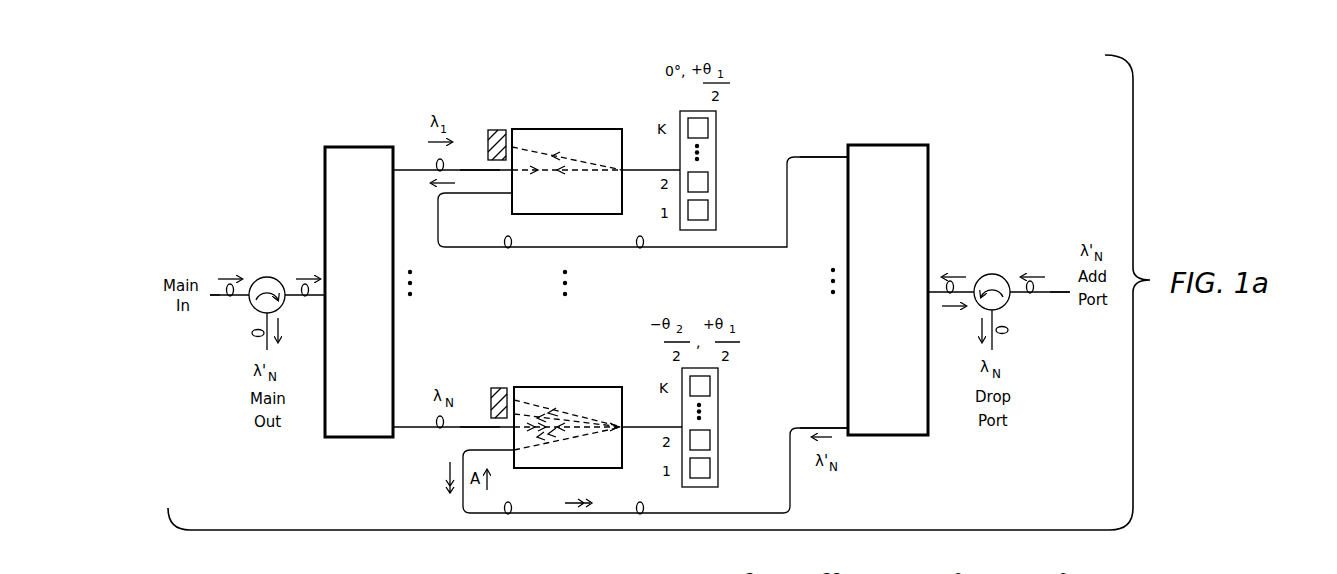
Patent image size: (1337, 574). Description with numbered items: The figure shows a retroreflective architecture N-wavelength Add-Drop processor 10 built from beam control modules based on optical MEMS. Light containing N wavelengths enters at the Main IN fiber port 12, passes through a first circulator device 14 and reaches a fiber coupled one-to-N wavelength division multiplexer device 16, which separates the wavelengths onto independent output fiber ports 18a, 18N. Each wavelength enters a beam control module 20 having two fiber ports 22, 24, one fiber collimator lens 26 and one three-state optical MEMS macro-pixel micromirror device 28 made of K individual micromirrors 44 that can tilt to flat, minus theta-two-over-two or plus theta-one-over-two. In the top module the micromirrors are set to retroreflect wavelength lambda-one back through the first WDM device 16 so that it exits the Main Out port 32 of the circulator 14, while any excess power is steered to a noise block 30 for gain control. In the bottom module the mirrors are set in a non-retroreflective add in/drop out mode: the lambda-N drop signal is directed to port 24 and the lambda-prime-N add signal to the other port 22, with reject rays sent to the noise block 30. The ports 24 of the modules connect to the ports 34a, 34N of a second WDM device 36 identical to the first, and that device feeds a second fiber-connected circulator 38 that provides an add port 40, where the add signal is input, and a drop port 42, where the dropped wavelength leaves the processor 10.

The retroreflective architecture N-wavelength Add-Drop processor 10 is at (255, 137).
The Main IN fiber port 12 is at (219, 296).
The first circulator device 14 is at (265, 277).
The fiber coupled 1:N wavelength division multiplexer device 16 is at (360, 147).
The output fiber port a 18a is at (427, 168).
The output fiber port N 18N is at (420, 430).
The beam control module 20 is at (566, 127).
The fiber port 22 is at (469, 168).
The fiber port 24 is at (500, 194).
The fiber collimator lens 26 is at (604, 204).
The 3-state optical MEMS macro-pixel micromirror device 28 is at (716, 224).
The noise block 30 is at (499, 130).
The Main Out port 32 is at (255, 333).
The port a of second WDM device 34a is at (810, 156).
The port N of second WDM device 34N is at (812, 427).
The second WDM device 36 is at (900, 410).
The second fiber-connected circulator 38 is at (988, 276).
The add port 40 is at (1052, 296).
The drop port 42 is at (1006, 326).
The micromirror 44 is at (706, 128).